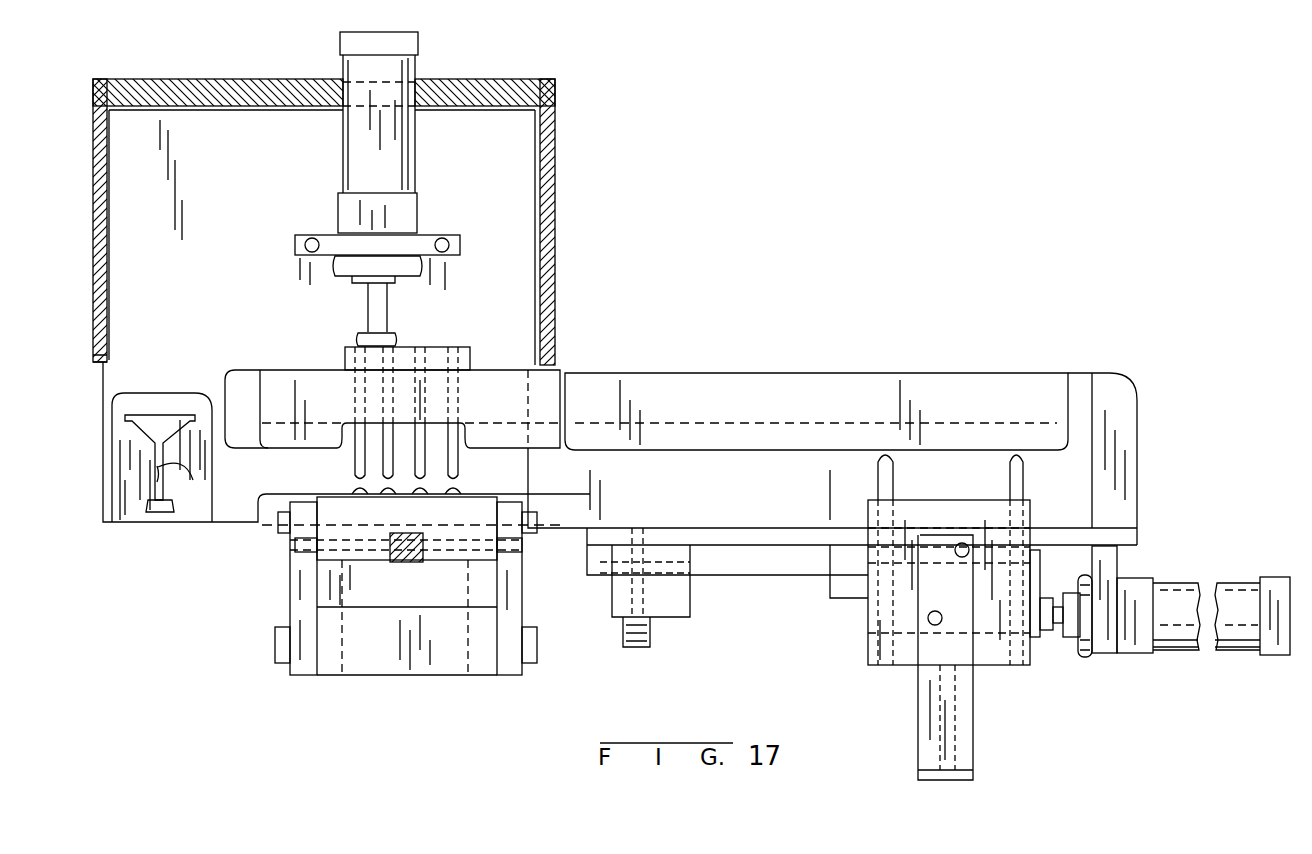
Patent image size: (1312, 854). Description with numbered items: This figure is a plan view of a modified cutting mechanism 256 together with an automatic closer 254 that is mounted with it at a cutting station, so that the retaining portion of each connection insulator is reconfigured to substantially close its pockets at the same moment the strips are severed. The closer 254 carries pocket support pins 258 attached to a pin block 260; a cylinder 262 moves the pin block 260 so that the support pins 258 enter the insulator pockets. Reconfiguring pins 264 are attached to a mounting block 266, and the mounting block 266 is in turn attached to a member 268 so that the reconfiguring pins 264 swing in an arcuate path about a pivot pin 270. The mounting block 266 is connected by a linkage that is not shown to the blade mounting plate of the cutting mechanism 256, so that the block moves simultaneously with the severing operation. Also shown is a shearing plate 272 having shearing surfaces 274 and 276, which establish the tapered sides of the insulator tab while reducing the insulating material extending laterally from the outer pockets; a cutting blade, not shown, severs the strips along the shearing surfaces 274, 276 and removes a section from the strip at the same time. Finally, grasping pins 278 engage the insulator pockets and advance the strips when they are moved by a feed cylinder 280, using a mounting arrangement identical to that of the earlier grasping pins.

The automatic closer 254 is at (367, 690).
The cutting mechanism 256 is at (137, 543).
The pocket support pins 258 is at (428, 461).
The pin block 260 is at (417, 348).
The cylinder 262 is at (410, 163).
The reconfiguring pins 264 is at (430, 491).
The mounting block 266 is at (452, 520).
The member 268 is at (300, 584).
The pivot pin 270 is at (283, 645).
The shearing plate 272 is at (122, 503).
The shearing surface 274 is at (177, 436).
The shearing surface 276 is at (184, 482).
The grasping pins 278 is at (893, 482).
The feed cylinder 280 is at (1165, 645).